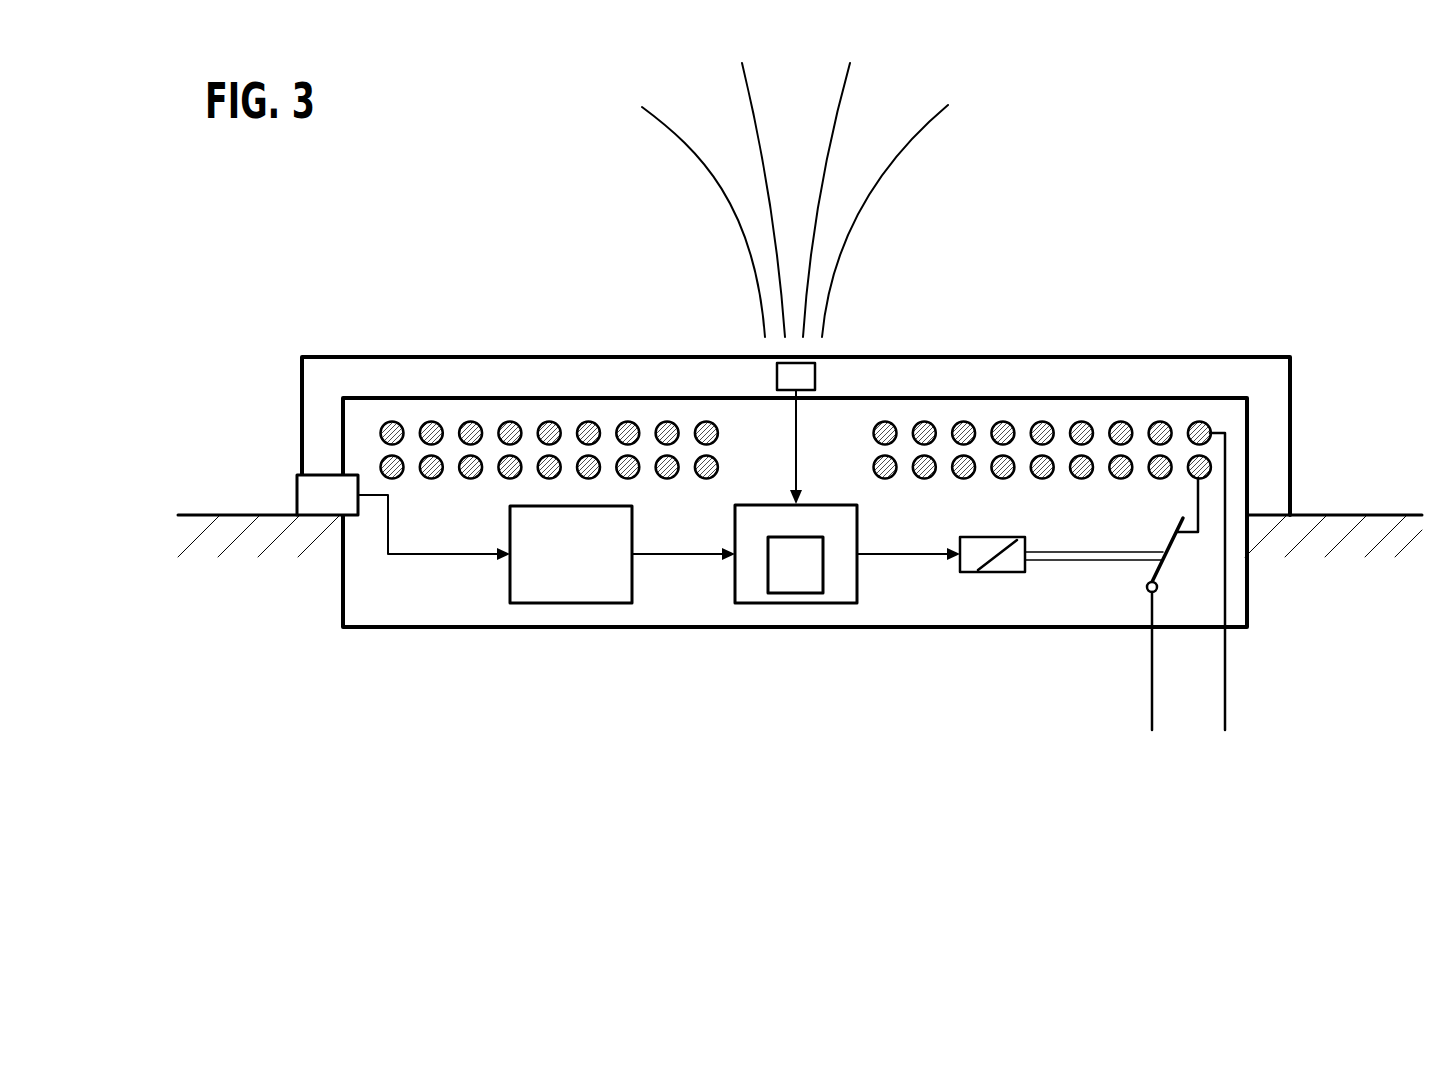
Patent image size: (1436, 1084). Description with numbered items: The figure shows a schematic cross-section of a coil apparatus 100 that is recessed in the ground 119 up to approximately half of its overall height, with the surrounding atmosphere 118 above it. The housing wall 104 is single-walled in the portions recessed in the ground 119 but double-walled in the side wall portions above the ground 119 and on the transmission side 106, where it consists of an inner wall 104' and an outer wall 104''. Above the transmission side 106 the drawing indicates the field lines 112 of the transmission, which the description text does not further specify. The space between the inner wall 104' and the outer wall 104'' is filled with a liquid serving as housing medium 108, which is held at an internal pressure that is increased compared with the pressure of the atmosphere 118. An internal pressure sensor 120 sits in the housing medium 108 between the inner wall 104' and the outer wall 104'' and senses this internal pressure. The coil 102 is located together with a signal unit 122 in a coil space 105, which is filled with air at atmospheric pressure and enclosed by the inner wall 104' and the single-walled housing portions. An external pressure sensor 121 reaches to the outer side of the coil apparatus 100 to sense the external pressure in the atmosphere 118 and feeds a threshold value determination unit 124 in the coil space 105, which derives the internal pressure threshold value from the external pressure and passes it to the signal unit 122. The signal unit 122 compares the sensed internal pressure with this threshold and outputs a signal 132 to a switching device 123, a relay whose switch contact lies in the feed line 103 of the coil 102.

The coil apparatus 100 is at (1281, 316).
The coil 102 is at (704, 422).
The feed line 103 is at (1225, 710).
The housing wall 104 is at (796, 464).
The inner wall 104' is at (796, 335).
The outer wall 104'' is at (796, 379).
The coil space 105 is at (370, 605).
The transmission side 106 is at (381, 352).
The housing medium 108 is at (1015, 377).
The steam jet 112 is at (858, 213).
The atmosphere 118 is at (1152, 228).
The ground 119 is at (1358, 515).
The internal pressure sensor 120 is at (815, 375).
The external pressure sensor 121 is at (297, 498).
The signal unit 122 is at (778, 603).
The switching device 123 is at (993, 572).
The threshold value determination unit 124 is at (565, 603).
The signal 132 is at (893, 554).